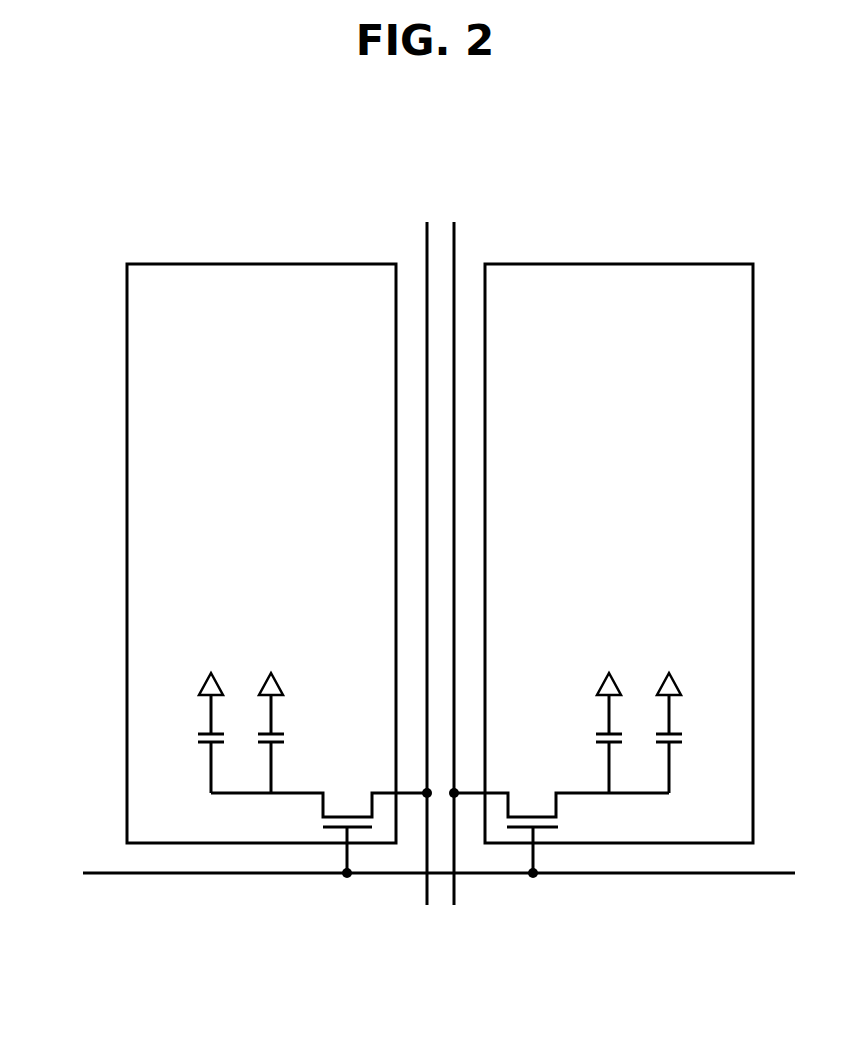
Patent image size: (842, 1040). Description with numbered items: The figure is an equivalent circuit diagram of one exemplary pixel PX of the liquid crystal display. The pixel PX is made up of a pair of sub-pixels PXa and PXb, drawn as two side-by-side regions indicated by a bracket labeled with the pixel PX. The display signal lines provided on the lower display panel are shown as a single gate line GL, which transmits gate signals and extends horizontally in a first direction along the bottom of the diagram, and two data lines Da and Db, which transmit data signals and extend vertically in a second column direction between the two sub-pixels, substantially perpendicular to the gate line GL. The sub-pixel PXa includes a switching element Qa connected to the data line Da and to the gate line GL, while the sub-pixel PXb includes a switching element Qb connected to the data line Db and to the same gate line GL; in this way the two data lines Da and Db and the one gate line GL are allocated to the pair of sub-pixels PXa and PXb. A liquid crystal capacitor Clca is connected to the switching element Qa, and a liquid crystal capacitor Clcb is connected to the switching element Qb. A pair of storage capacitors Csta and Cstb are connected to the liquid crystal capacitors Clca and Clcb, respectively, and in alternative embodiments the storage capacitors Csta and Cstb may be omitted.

The pixel PX is at (567, 146).
The sub-pixel PXa is at (558, 264).
The sub-pixel PXb is at (332, 264).
The gate line GL is at (421, 877).
The data line Da is at (474, 563).
The data line Db is at (409, 563).
The switching element Qa is at (559, 833).
The switching element Qb is at (321, 833).
The liquid crystal capacitor Clca is at (585, 733).
The liquid crystal capacitor Clcb is at (295, 733).
The storage capacitor Csta is at (694, 733).
The storage capacitor Cstb is at (189, 733).